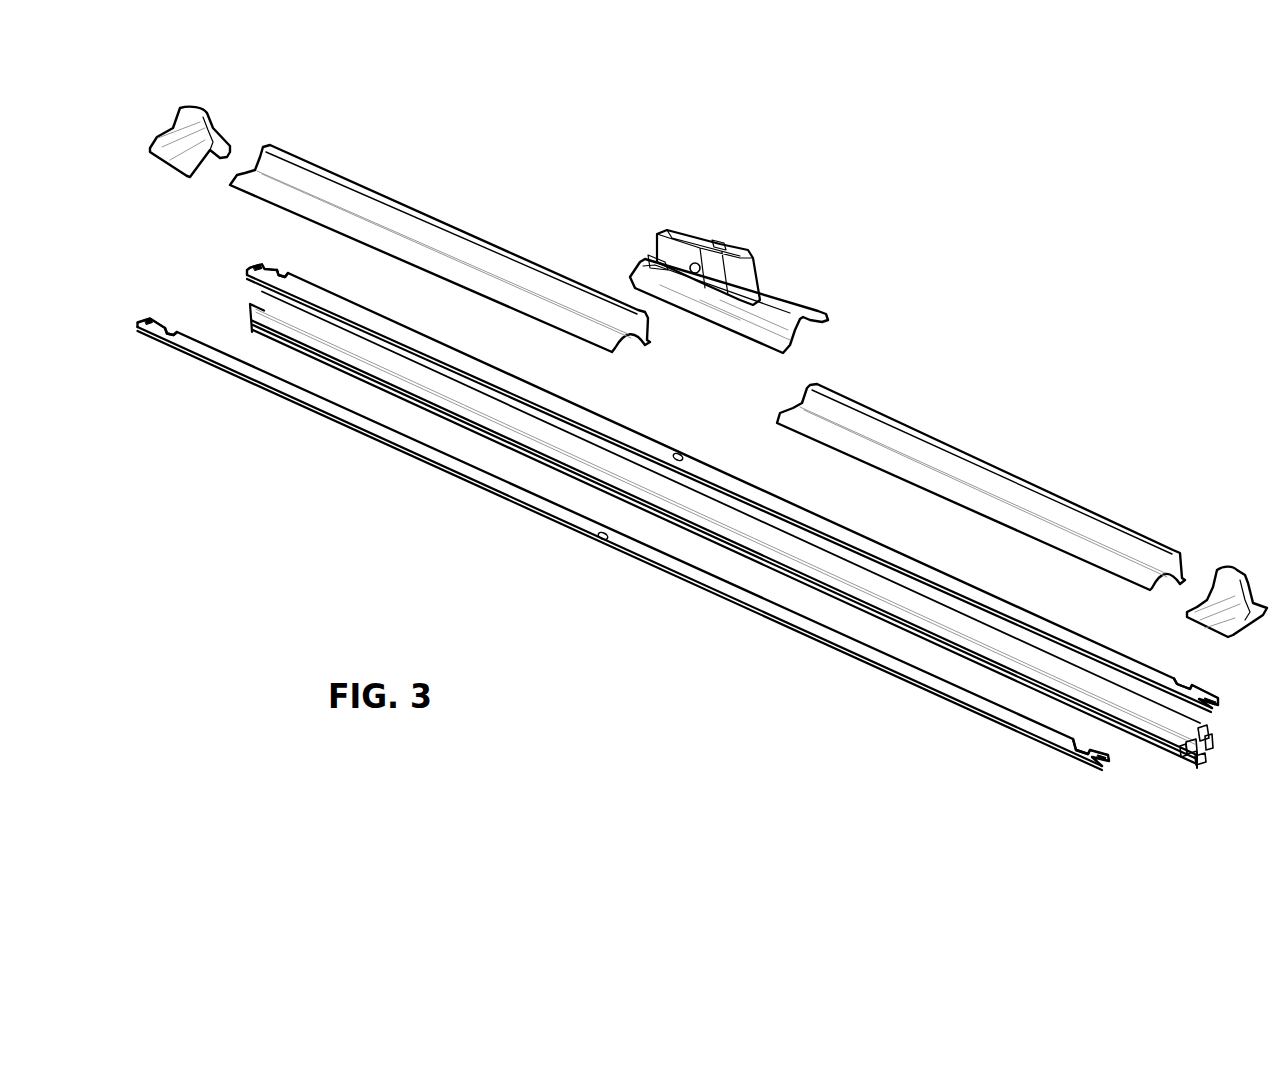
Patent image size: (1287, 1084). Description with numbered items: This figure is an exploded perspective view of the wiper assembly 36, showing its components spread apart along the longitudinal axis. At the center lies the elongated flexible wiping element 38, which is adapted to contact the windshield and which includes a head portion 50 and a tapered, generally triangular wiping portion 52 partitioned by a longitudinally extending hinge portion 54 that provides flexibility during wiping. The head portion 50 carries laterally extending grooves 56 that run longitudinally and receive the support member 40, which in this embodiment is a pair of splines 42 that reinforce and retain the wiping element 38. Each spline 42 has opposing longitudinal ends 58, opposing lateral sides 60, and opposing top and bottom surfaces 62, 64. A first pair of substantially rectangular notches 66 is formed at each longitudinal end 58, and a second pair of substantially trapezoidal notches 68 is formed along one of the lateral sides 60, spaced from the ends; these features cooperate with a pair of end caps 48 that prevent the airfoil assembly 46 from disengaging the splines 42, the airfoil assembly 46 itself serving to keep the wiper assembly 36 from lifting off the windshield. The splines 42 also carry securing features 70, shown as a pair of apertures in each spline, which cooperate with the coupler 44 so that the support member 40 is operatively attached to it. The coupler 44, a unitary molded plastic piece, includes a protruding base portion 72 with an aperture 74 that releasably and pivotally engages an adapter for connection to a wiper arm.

The wiper assembly 36 is at (935, 255).
The wiping element 38 is at (1160, 756).
The support member 40 is at (357, 432).
The splines 42 is at (966, 580).
The coupler 44 is at (806, 297).
The airfoil assembly 46 is at (435, 216).
The end caps 48 is at (208, 108).
The head portion 50 is at (1210, 732).
The wiping portion 52 is at (1195, 756).
The hinge portion 54 is at (1205, 752).
The grooves 56 is at (1212, 746).
The longitudinal ends 58 is at (257, 264).
The lateral sides 60 is at (333, 294).
The top surface 62 is at (375, 312).
The bottom surface 64 is at (276, 297).
The first pair of notches 66 is at (254, 267).
The second pair of notches 68 is at (284, 275).
The securing features 70 is at (679, 455).
The protruding base portion 72 is at (757, 283).
The aperture 74 is at (695, 274).